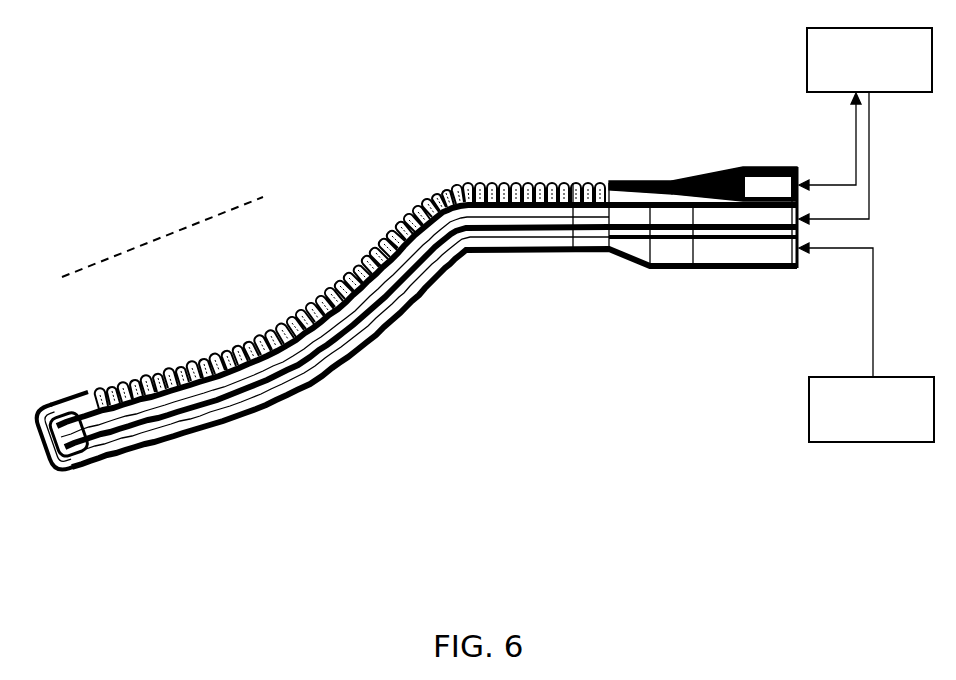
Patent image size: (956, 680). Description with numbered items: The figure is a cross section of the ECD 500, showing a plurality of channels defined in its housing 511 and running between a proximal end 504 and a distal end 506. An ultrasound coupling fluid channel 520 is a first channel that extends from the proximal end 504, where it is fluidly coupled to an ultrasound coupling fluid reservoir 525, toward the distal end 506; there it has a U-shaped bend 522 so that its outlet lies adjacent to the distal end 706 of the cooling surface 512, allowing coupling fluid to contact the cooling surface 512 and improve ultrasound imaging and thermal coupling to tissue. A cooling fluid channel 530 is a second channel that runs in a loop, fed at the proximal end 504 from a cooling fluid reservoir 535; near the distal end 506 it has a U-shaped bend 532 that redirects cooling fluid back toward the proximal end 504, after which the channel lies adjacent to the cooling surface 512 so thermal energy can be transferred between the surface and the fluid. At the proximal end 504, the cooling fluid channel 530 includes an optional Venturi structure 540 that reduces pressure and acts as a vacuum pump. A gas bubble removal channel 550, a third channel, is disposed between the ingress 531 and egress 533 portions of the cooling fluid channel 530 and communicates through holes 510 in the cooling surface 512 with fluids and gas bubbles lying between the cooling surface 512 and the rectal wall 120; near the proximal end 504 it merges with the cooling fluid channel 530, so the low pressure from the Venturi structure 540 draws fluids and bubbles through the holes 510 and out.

The rectal wall 120 is at (140, 247).
The ECD 500 is at (101, 333).
The proximal end 504 is at (808, 182).
The distal end 506 is at (38, 446).
The holes 510 is at (268, 318).
The housing 511 is at (788, 160).
The cooling surface 512 is at (204, 308).
The ultrasound coupling fluid channel 520 is at (431, 347).
The U-shaped bend 522 is at (53, 476).
The ultrasound coupling fluid reservoir 525 is at (866, 342).
The cooling fluid channel 530 is at (163, 378).
The ingress portion 531 is at (217, 383).
The U-shaped bend 532 is at (79, 450).
The egress portion 533 is at (330, 285).
The cooling fluid reservoir 535 is at (869, 60).
The Venturi structure 540 is at (733, 154).
The gas bubble removal channel 550 is at (668, 186).
The distal end of the cooling surface 706 is at (85, 388).